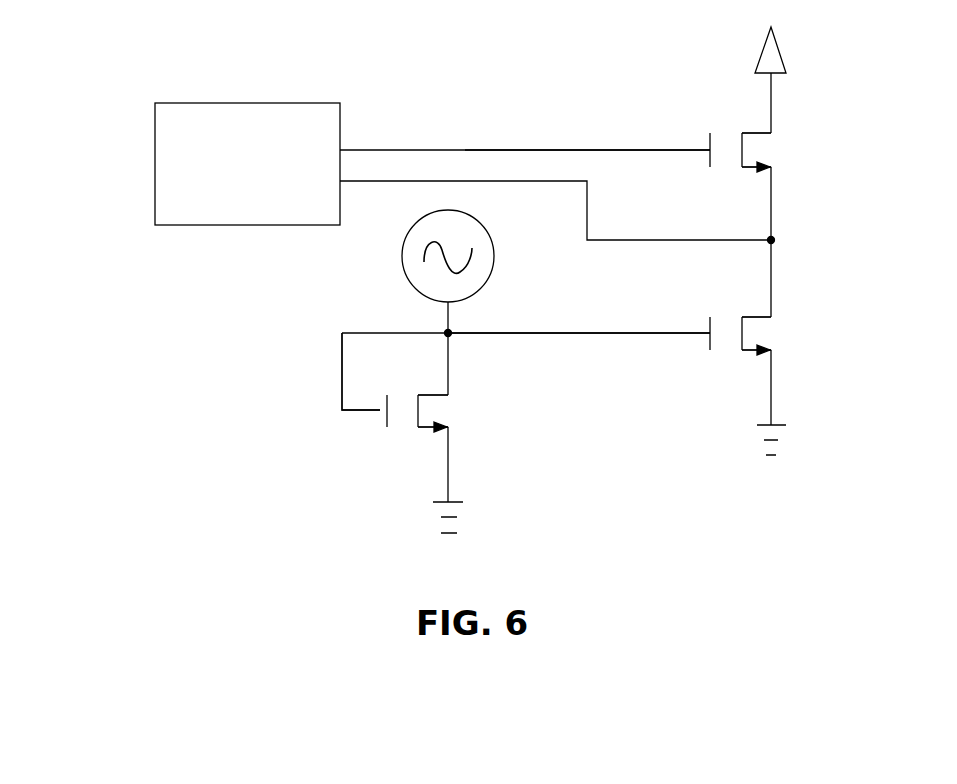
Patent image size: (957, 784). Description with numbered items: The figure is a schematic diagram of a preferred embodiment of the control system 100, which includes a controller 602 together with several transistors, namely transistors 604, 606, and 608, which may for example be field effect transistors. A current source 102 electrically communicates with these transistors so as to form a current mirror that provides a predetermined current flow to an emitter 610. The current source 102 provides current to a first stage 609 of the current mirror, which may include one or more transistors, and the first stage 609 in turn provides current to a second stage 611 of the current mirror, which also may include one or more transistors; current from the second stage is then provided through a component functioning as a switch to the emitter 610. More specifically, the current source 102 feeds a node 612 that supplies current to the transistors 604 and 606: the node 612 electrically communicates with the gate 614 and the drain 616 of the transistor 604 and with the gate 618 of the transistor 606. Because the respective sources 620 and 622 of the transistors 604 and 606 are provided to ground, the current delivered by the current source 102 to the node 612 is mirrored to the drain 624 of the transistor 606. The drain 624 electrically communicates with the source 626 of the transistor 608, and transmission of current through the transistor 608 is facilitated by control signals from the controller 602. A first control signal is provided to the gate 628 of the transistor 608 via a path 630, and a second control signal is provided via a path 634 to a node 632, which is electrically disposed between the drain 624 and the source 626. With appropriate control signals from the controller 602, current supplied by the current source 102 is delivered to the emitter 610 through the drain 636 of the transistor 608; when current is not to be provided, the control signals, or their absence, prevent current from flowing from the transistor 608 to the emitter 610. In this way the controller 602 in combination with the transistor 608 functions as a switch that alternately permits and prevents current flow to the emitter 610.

The control system 100 is at (215, 462).
The current source 102 is at (495, 256).
The controller 602 is at (200, 103).
The transistor 604 is at (366, 445).
The transistor 606 is at (688, 366).
The transistor 608 is at (688, 182).
The first stage 609 is at (536, 430).
The emitter 610 is at (779, 42).
The second stage 611 is at (627, 381).
The node 612 is at (446, 332).
The gate 614 is at (372, 412).
The drain 616 is at (435, 394).
The gate 618 is at (696, 331).
The source 620 is at (434, 425).
The source 622 is at (757, 348).
The drain 624 is at (757, 316).
The source 626 is at (757, 164).
The gate 628 is at (695, 149).
The path 630 is at (465, 150).
The node 632 is at (772, 240).
The path 634 is at (587, 228).
The drain 636 is at (757, 133).